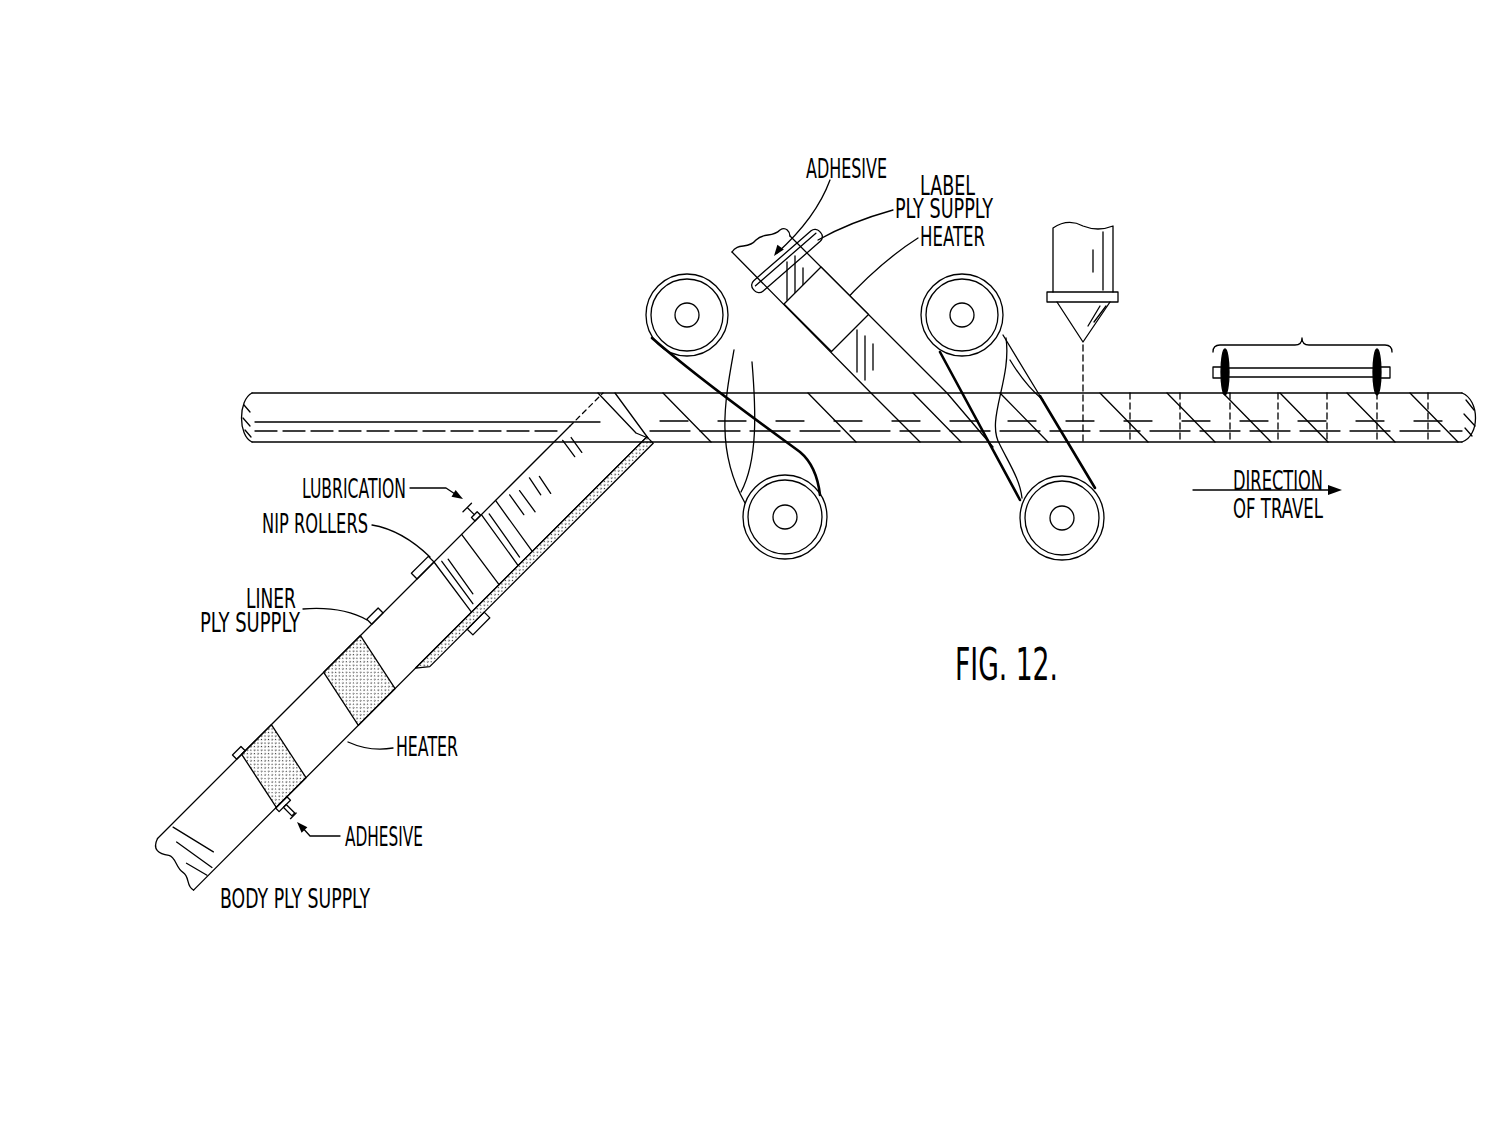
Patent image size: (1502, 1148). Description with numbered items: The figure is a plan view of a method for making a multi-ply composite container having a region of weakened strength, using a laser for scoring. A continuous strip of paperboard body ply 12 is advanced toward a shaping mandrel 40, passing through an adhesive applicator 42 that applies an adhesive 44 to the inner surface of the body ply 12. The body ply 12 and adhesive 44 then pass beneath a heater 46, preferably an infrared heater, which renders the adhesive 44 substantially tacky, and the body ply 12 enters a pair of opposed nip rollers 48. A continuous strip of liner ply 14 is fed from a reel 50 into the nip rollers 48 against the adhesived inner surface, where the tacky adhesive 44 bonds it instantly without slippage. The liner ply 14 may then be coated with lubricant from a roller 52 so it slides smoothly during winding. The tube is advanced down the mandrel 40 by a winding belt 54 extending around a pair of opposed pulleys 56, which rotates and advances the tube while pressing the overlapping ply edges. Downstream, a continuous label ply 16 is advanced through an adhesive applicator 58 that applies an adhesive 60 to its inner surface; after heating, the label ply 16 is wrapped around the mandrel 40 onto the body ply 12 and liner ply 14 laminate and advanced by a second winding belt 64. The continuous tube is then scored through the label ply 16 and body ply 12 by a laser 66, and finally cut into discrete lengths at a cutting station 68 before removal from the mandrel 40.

The body ply 12 is at (205, 808).
The liner ply 14 is at (428, 648).
The label ply 16 is at (752, 268).
The shaping mandrel 40 is at (350, 405).
The adhesive applicator 42 is at (292, 809).
The adhesive 44 is at (260, 743).
The heater 46 is at (358, 712).
The nip rollers 48 is at (430, 570).
The reel 50 is at (375, 611).
The roller 52 is at (493, 522).
The winding belt 54 is at (737, 332).
The pulleys 56 is at (660, 318).
The adhesive applicator 58 is at (780, 253).
The adhesive 60 is at (821, 268).
The winding belt 64 is at (1013, 502).
The laser 66 is at (1113, 262).
The cutting station 68 is at (1340, 354).